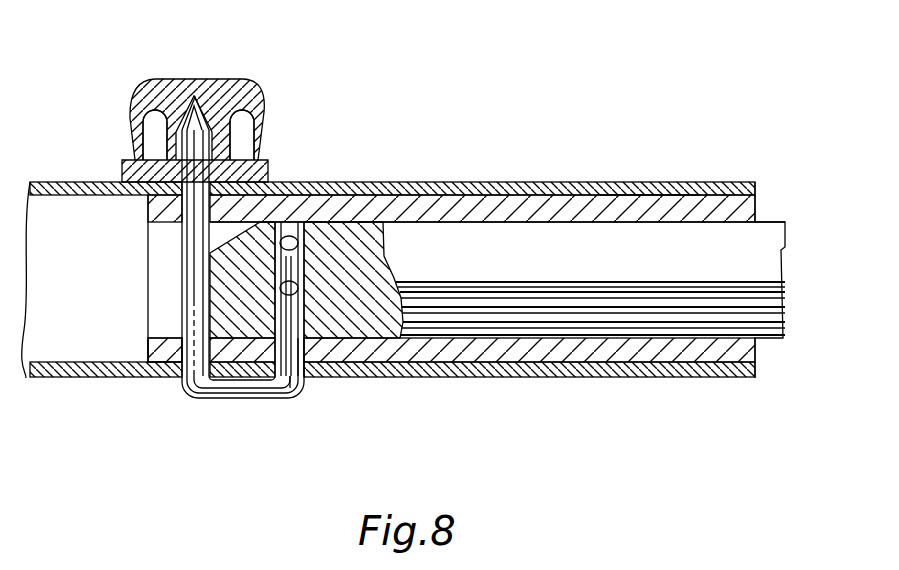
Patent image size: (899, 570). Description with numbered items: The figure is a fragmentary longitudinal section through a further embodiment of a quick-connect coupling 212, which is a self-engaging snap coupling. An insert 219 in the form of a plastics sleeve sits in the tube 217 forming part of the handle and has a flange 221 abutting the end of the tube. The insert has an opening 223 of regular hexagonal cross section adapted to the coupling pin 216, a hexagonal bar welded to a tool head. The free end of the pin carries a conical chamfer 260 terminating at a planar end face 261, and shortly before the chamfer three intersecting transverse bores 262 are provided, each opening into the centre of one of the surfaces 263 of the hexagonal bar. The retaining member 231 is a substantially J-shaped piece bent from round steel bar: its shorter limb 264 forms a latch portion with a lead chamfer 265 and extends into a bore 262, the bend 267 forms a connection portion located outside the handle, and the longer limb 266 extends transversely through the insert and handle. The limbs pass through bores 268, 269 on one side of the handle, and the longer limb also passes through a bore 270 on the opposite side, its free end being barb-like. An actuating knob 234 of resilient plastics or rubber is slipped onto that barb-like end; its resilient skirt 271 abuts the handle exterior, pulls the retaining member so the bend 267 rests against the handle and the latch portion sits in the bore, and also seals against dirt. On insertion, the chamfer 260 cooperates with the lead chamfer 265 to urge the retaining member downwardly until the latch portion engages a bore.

The quick-connect coupling 212 is at (520, 387).
The coupling pin 216 is at (413, 232).
The tube 217 is at (517, 194).
The insert 219 is at (578, 212).
The flange 221 is at (747, 198).
The opening 223 is at (641, 226).
The retaining member 231 is at (294, 400).
The actuating knob 234 is at (192, 90).
The conical chamfer 260 is at (192, 368).
The planar end face 261 is at (202, 285).
The transverse bores 262 is at (300, 232).
The surfaces 263 is at (465, 306).
The shorter limb 264 is at (273, 398).
The lead chamfer 265 is at (346, 362).
The longer limb 266 is at (196, 254).
The bend 267 is at (243, 386).
The bore 268 is at (312, 374).
The bore 269 is at (173, 345).
The bore 270 is at (177, 203).
The resilient skirt 271 is at (258, 130).